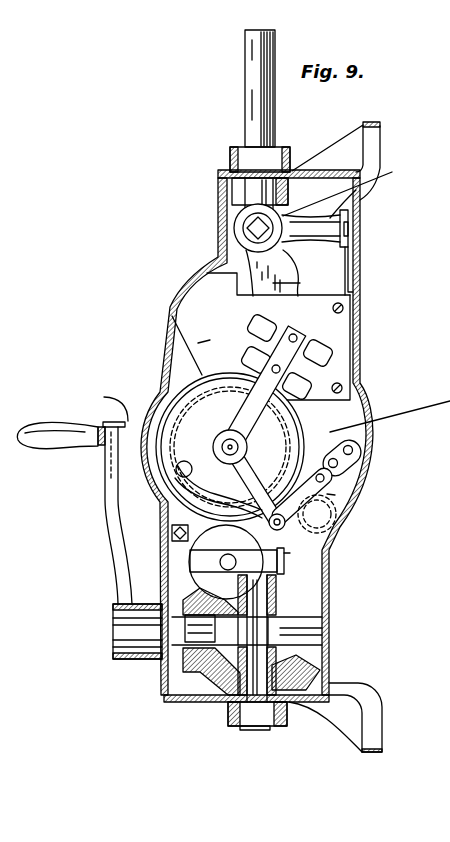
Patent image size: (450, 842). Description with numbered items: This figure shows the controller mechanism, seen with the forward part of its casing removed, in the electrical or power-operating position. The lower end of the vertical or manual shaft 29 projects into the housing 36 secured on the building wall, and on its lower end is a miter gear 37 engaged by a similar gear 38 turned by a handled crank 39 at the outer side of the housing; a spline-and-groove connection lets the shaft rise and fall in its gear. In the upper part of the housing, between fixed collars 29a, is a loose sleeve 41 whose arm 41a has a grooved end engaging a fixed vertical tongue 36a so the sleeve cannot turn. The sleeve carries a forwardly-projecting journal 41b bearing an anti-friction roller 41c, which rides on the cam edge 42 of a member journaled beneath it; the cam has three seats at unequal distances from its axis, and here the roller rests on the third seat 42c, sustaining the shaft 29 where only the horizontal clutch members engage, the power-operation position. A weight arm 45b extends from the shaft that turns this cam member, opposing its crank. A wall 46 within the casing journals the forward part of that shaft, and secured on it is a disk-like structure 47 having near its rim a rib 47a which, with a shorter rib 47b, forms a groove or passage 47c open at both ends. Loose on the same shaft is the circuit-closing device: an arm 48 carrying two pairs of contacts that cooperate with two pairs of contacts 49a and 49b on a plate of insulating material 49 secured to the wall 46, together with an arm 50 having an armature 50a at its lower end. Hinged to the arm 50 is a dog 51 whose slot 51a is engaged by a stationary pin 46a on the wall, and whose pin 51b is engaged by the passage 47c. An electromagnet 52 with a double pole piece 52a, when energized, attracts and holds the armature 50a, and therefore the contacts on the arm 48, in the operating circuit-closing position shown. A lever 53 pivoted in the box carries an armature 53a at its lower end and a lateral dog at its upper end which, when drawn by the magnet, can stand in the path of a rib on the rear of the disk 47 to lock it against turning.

The vertical or manual shaft 29 is at (252, 103).
The fixed collars 29a is at (248, 187).
The housing 36 is at (236, 222).
The fixed vertical tongue 36a is at (349, 268).
The miter gear 37 is at (300, 672).
The miter gear 38 is at (158, 673).
The handled crank 39 is at (105, 480).
The loose sleeve 41 is at (372, 180).
The arm 41a is at (356, 190).
The forwardly-projecting journal 41b is at (349, 224).
The anti-friction roller 41c is at (348, 249).
The cam edge 42 is at (300, 283).
The third seat 42c is at (244, 252).
The weight arm 45b is at (210, 433).
The wall 46 is at (270, 435).
The stationary pin 46a is at (305, 455).
The disk-like structure 47 is at (312, 405).
The rib 47a is at (222, 457).
The shorter rib 47b is at (190, 553).
The groove or passage 47c is at (286, 553).
The arm 48 is at (353, 318).
The plate of insulating material 49 is at (198, 343).
The circuit-closing contacts 49a is at (258, 352).
The circuit-closing contacts 49b is at (322, 372).
The arm 50 is at (330, 546).
The armature 50a is at (262, 568).
The dog 51 is at (340, 502).
The slot 51a is at (335, 495).
The pin 51b is at (330, 477).
The electromagnet 52 is at (242, 585).
The double pole piece 52a is at (133, 603).
The lever 53 is at (174, 536).
The armature 53a is at (200, 566).